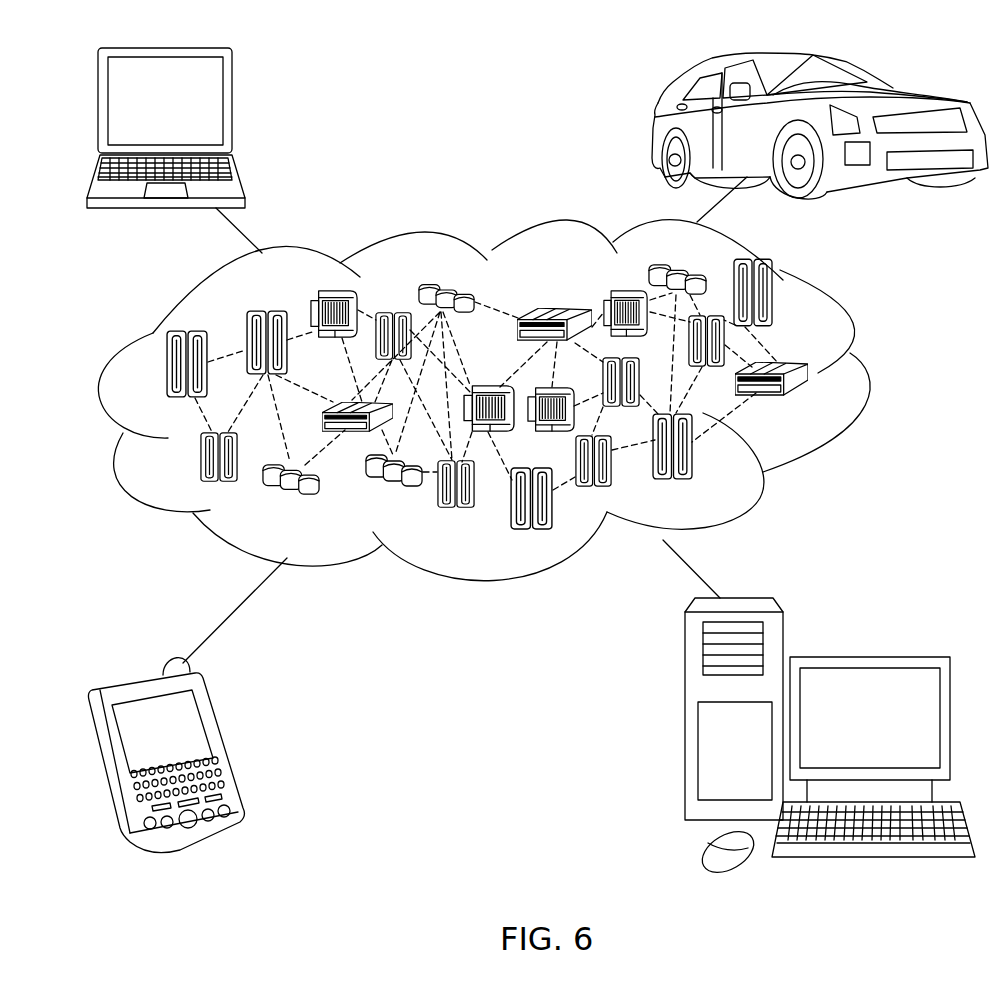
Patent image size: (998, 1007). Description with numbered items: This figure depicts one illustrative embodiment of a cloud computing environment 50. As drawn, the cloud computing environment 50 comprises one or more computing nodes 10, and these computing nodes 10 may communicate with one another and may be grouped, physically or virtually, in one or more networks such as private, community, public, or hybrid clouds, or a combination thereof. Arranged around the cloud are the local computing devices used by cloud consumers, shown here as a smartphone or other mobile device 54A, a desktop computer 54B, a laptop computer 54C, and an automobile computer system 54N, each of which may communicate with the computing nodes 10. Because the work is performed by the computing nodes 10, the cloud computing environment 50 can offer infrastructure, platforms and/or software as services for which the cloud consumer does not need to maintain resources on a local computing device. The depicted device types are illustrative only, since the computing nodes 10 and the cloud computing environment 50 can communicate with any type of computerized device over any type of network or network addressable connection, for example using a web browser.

The computing nodes 10 is at (813, 407).
The cloud computing environment 50 is at (868, 377).
The smartphone or other mobile device 54A is at (225, 742).
The desktop computer 54B is at (867, 655).
The laptop computer 54C is at (240, 109).
The automobile computer system 54N is at (655, 128).